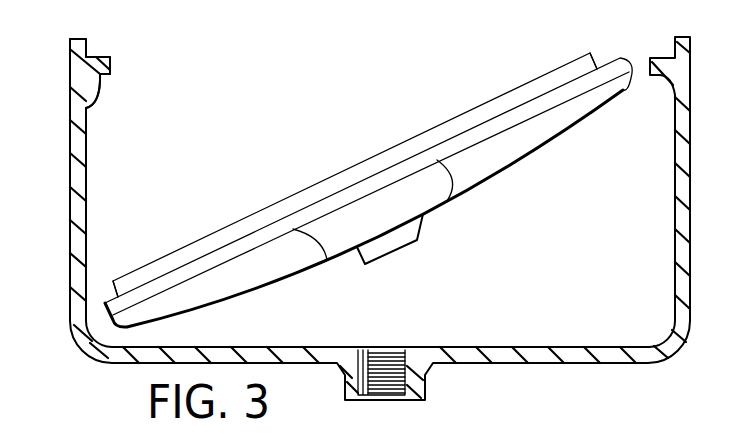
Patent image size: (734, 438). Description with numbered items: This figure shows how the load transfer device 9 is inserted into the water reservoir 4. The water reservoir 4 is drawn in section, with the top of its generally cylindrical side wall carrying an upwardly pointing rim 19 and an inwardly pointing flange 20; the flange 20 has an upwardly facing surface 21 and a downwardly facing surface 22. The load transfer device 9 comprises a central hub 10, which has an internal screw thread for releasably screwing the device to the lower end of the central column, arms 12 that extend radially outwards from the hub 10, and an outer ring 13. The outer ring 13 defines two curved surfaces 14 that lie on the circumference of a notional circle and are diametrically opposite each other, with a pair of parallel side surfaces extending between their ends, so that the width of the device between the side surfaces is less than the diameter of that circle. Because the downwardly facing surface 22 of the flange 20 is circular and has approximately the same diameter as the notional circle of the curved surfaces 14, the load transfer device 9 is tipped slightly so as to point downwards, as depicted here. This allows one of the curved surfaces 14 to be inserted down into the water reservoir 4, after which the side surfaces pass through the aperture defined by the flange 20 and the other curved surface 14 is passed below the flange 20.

The water reservoir 4 is at (104, 179).
The load transfer device 9 is at (367, 181).
The central hub 10 is at (427, 197).
The arms 12 is at (520, 145).
The outer ring 13 is at (527, 82).
The curved surfaces 14 is at (106, 302).
The rim 19 is at (87, 40).
The flange 20 is at (108, 75).
The upwardly facing surface 21 is at (108, 58).
The downwardly facing surface 22 is at (100, 108).